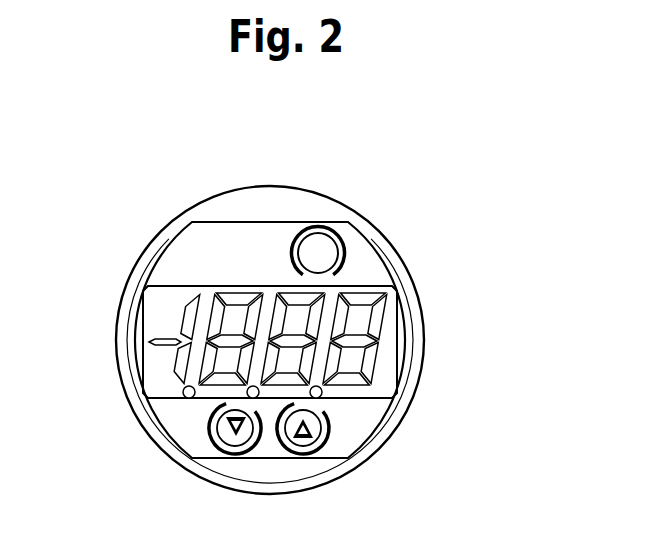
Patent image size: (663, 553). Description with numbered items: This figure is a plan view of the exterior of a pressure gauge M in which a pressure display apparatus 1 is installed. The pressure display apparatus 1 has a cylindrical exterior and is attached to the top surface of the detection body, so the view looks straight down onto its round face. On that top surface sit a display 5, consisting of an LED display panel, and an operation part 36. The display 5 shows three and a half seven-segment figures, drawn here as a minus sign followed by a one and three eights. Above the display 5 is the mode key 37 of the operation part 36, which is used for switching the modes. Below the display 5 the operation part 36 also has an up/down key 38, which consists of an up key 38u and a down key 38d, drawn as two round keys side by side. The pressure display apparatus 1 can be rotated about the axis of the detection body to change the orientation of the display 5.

The pressure display apparatus 1 is at (420, 262).
The pressure gauge M is at (117, 213).
The display 5 is at (387, 349).
The mode key 37 is at (346, 252).
The operation part 36 is at (205, 449).
The up/down key 38 is at (356, 440).
The down key 38d is at (258, 447).
The up key 38u is at (322, 447).